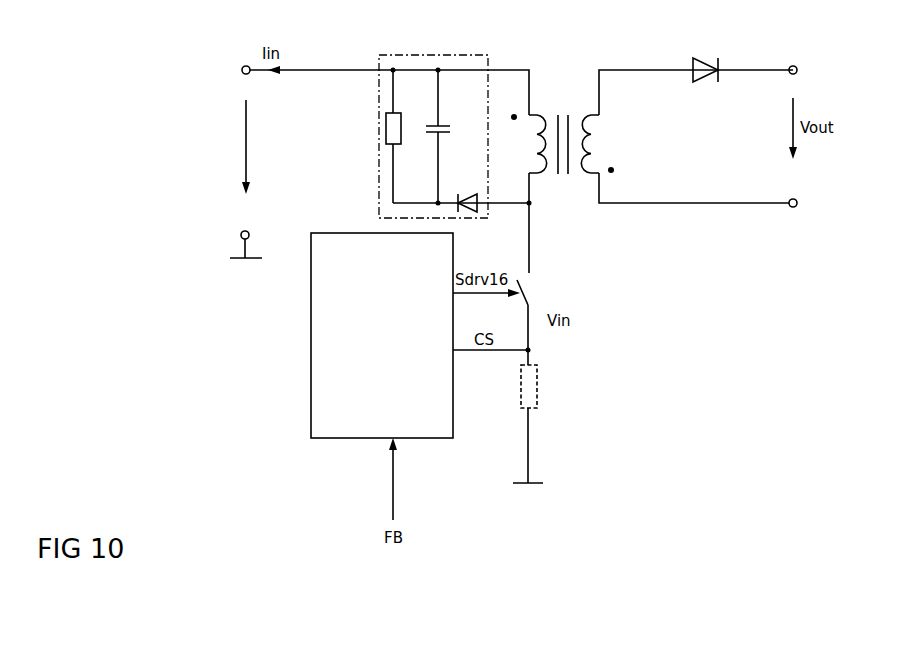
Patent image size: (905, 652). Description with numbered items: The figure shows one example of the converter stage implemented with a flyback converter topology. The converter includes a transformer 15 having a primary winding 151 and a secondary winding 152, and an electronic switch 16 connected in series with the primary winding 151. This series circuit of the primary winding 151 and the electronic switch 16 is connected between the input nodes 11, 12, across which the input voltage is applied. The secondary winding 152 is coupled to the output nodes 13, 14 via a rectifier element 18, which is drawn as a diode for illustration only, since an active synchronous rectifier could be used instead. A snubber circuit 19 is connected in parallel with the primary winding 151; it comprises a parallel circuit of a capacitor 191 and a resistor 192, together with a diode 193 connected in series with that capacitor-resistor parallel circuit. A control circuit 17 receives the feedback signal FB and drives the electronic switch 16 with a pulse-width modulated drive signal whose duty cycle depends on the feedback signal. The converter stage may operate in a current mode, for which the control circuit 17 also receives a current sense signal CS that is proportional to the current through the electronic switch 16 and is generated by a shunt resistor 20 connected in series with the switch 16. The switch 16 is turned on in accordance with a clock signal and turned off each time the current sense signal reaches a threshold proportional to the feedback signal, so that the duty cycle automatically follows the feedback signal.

The input node 11 is at (247, 59).
The input node 12 is at (382, 370).
The output node 13 is at (794, 59).
The output node 14 is at (794, 215).
The transformer 15 is at (565, 110).
The primary winding 151 is at (522, 143).
The secondary winding 152 is at (606, 144).
The electronic switch 16 is at (541, 315).
The control circuit 17 is at (382, 335).
The rectifier element 18 is at (712, 62).
The snubber circuit 19 is at (455, 111).
The capacitor 191 is at (453, 136).
The resistor 192 is at (406, 136).
The diode 193 is at (466, 193).
The shunt resistor 20 is at (546, 379).